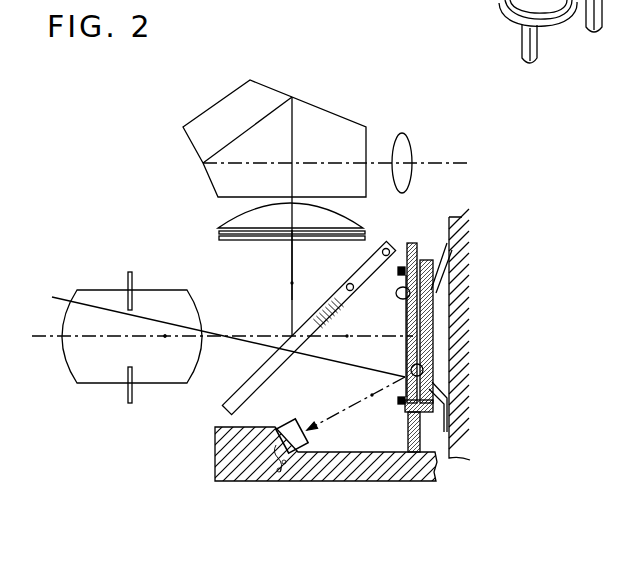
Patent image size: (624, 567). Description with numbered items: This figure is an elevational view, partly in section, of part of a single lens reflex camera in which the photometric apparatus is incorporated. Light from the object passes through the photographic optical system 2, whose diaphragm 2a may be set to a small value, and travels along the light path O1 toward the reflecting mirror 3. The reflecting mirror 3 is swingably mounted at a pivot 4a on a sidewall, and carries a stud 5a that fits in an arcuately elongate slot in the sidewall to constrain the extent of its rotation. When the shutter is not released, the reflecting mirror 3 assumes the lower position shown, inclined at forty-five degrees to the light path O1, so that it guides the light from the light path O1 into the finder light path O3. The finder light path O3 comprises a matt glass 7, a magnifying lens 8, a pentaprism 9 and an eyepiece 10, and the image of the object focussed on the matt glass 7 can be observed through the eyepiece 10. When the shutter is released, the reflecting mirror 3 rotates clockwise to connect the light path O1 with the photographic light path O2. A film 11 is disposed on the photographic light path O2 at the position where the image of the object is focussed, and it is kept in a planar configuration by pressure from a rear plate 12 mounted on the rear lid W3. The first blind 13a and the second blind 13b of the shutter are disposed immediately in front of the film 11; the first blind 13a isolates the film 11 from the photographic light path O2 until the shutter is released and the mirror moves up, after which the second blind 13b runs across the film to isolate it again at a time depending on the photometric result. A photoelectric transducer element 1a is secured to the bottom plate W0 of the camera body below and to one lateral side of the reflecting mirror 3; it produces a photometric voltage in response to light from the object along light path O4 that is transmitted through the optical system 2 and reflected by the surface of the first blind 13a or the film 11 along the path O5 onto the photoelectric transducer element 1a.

The photographic optical system 2 is at (95, 297).
The diaphragm 2a is at (125, 288).
The light path O4 is at (165, 333).
The light path O1 is at (165, 340).
The finder light path O3 is at (292, 283).
The photographic light path O2 is at (347, 338).
The light path O5 is at (372, 398).
The pentaprism 9 is at (340, 122).
The eyepiece 10 is at (407, 150).
The magnifying lens 8 is at (350, 226).
The matt glass 7 is at (294, 240).
The reflecting mirror 3 is at (270, 372).
The pivot 4a is at (388, 247).
The stud 5a is at (349, 292).
The rear lid W3 is at (455, 222).
The film 11 is at (420, 263).
The rear plate 12 is at (435, 328).
The first blind 13a is at (410, 293).
The second blind 13b is at (423, 372).
The bottom plate W0 is at (217, 465).
The photoelectric transducer element 1a is at (300, 453).